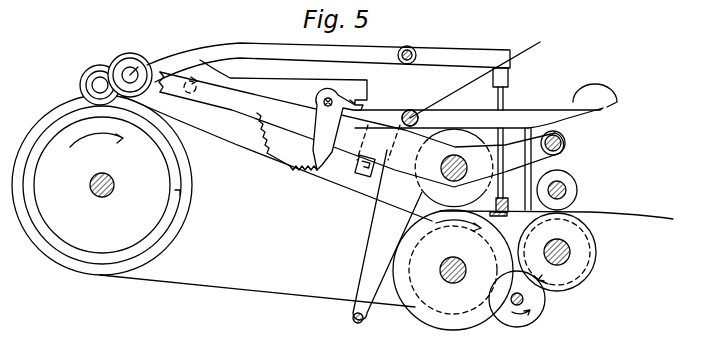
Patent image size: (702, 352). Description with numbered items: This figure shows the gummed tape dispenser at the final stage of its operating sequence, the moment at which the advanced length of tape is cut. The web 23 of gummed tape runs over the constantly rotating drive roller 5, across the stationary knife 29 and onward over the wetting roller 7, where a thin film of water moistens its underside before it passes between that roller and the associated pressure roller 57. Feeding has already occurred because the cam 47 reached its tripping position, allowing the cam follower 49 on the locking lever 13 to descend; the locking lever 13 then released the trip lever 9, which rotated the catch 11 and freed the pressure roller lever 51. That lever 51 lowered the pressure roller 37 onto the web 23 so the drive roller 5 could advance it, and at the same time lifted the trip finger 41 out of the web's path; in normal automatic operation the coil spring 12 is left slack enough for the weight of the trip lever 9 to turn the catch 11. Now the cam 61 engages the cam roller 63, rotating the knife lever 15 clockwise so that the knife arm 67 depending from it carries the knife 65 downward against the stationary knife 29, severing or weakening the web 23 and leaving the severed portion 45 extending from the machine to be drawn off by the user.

The drive roller 5 is at (428, 322).
The wetting roller 7 is at (582, 260).
The trip lever 9 is at (443, 113).
The catch 11 is at (320, 150).
The coil spring 12 is at (296, 172).
The locking lever 13 is at (290, 80).
The knife lever 15 is at (257, 45).
The web 23 is at (372, 245).
The stationary knife 29 is at (497, 214).
The pressure roller 37 is at (432, 192).
The trip finger 41 is at (540, 125).
The severed portion 45 is at (600, 212).
The cam 47 is at (173, 208).
The cam follower 49 is at (83, 80).
The pressure roller lever 51 is at (240, 117).
The pressure roller 57 is at (563, 180).
The cam 61 is at (142, 233).
The cam roller 63 is at (133, 53).
The knife 65 is at (510, 200).
The knife arm 67 is at (508, 92).